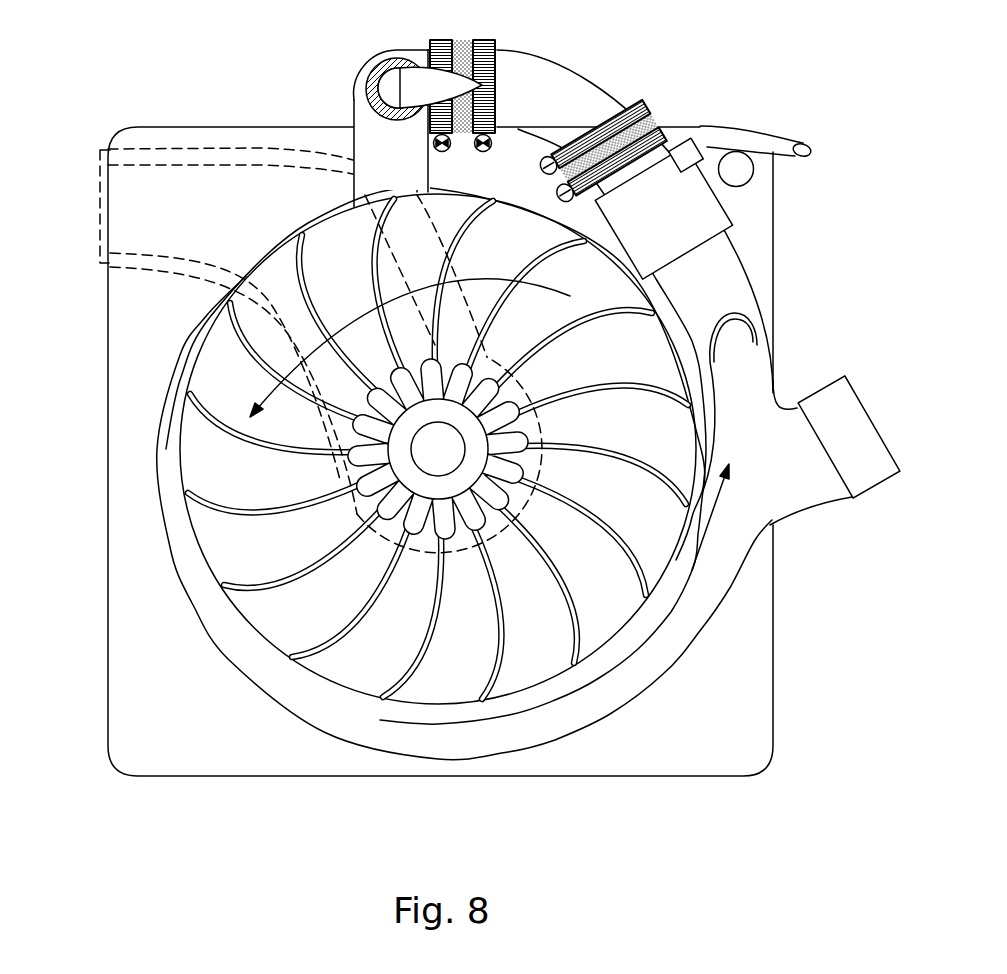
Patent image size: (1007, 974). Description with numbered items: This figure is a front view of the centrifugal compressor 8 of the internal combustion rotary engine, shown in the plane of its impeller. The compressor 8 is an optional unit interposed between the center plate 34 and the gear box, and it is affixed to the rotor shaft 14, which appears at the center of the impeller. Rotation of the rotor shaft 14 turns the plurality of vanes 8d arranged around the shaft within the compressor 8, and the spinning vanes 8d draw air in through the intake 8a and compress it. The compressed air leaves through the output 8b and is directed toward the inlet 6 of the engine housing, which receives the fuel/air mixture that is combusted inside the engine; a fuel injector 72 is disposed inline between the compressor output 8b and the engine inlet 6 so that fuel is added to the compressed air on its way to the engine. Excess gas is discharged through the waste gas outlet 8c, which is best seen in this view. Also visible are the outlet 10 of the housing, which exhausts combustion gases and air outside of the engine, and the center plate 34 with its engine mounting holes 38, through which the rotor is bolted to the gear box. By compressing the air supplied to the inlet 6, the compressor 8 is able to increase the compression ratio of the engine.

The compressor 8 is at (268, 695).
The intake 8a is at (100, 157).
The output 8b is at (700, 583).
The waste gas outlet 8c is at (850, 380).
The vanes 8d is at (560, 360).
The rotor shaft 14 is at (456, 467).
The inlet 6 is at (383, 146).
The outlet 10 is at (521, 188).
The fuel injector 72 is at (676, 228).
The center plate 34 is at (757, 233).
The engine mounting holes 38 is at (754, 177).